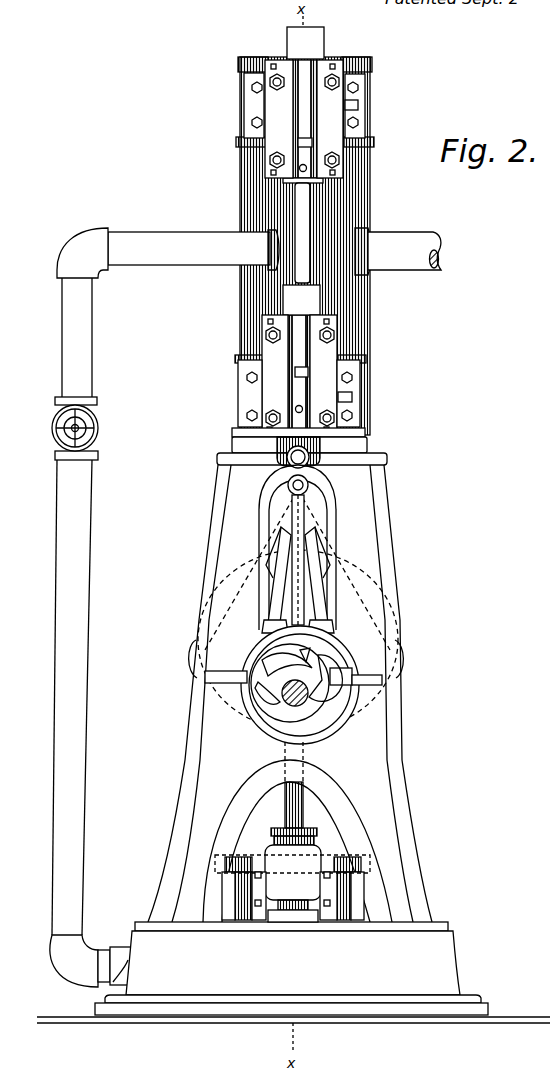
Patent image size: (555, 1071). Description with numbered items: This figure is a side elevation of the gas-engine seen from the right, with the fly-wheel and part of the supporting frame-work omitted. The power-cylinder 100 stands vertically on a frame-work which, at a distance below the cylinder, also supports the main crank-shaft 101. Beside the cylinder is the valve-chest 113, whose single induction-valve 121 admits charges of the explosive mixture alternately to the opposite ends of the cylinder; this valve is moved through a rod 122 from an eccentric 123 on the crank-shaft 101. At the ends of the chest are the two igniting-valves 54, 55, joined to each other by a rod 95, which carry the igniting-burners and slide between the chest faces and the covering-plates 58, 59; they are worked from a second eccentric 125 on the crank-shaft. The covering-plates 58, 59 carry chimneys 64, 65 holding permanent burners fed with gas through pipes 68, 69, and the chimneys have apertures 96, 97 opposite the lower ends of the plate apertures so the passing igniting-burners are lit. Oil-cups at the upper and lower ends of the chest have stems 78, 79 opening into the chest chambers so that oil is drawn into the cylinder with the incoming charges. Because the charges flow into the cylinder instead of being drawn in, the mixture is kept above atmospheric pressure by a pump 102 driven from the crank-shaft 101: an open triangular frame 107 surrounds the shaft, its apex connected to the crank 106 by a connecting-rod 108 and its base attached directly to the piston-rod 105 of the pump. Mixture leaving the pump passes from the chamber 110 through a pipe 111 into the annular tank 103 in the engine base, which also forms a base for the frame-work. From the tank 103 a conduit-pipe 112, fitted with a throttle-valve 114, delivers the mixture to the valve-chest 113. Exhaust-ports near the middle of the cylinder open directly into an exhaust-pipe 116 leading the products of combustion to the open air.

The igniting-valve 54 is at (305, 43).
The igniting-valve 55 is at (301, 300).
The covering-plate 58 is at (279, 119).
The covering-plate 59 is at (275, 373).
The chimney 64 is at (318, 107).
The chimney 65 is at (314, 373).
The gas pipe 68 is at (306, 166).
The gas pipe 69 is at (296, 408).
The oil-cup stem 78 is at (358, 105).
The oil-cup stem 79 is at (352, 397).
The rod 95 is at (302, 228).
The aperture 96 is at (298, 143).
The aperture 97 is at (308, 372).
The power-cylinder 100 is at (247, 201).
The main crank-shaft 101 is at (290, 704).
The pump 102 is at (335, 918).
The tank 103 is at (291, 968).
The piston-rod of the pump 105 is at (303, 812).
The crank 106 is at (275, 688).
The open triangular frame 107 is at (395, 661).
The connecting-rod 108 is at (292, 600).
The chamber 110 is at (293, 864).
The pipe 111 is at (288, 914).
The conduit-pipe 112 is at (164, 607).
The valve-chest 113 is at (323, 233).
The throttle-valve 114 is at (96, 428).
The exhaust-pipe 116 is at (398, 251).
The induction-valve 121 is at (298, 593).
The rod 122 is at (303, 556).
The eccentric 123 is at (342, 732).
The eccentric 125 is at (262, 704).